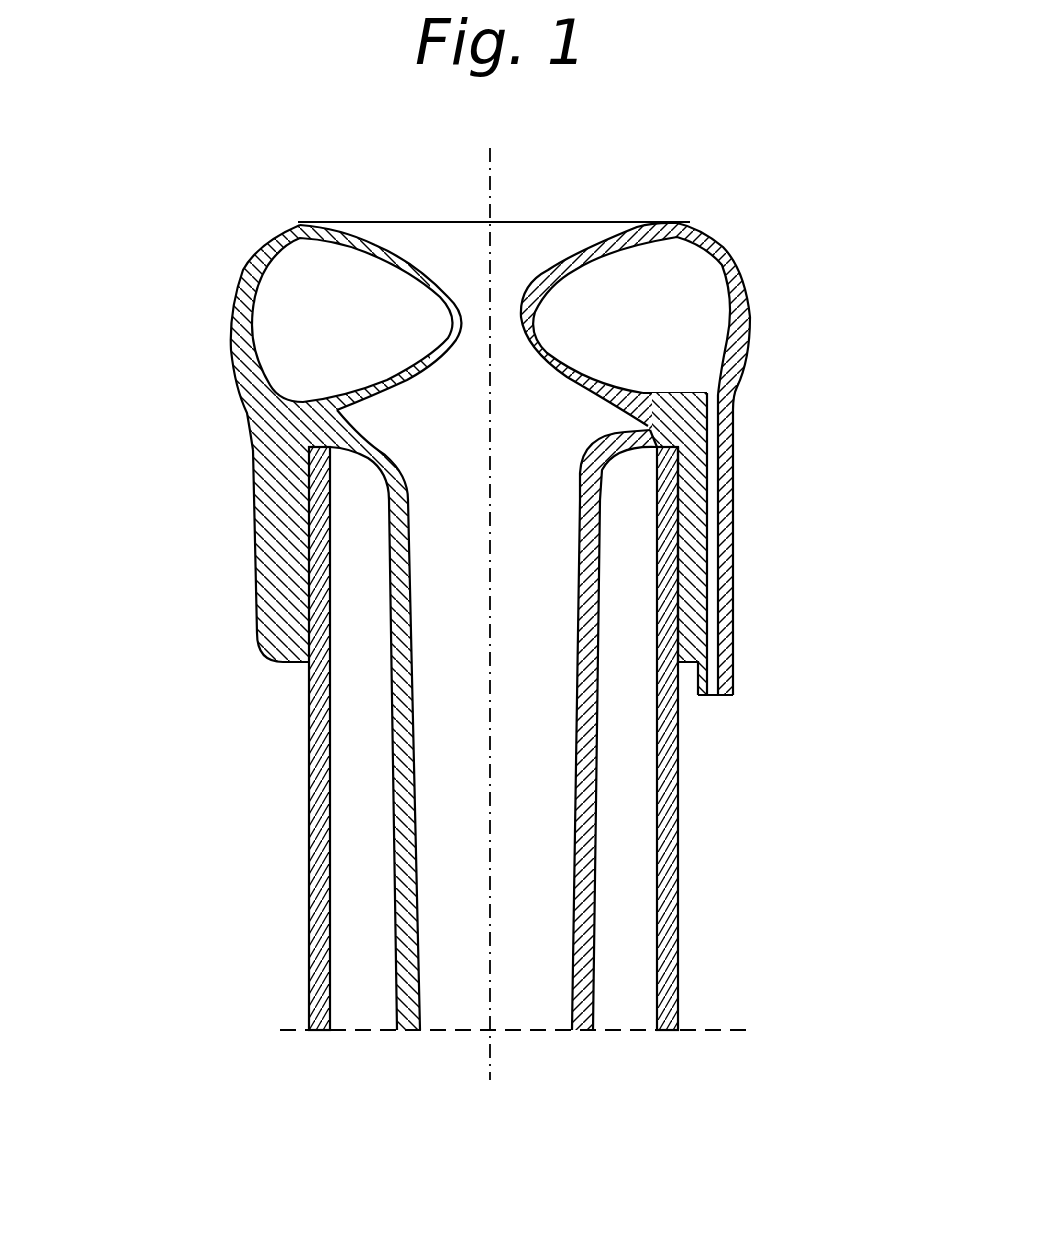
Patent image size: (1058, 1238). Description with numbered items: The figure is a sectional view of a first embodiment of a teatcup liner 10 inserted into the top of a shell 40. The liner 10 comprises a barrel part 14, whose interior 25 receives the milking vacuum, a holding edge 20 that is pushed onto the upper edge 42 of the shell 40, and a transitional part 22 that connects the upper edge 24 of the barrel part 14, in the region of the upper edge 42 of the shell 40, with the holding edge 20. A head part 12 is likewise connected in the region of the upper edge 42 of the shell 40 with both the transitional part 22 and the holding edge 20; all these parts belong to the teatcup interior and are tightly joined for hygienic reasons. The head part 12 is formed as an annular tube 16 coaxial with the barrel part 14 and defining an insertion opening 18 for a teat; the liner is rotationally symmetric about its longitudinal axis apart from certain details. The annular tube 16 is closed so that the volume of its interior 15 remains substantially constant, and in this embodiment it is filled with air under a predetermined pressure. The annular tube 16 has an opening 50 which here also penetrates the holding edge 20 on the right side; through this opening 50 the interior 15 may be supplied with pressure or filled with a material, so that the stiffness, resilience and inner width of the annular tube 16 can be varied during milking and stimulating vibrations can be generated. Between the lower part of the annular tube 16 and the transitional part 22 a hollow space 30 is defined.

The liner 10 is at (732, 245).
The head part 12 is at (260, 410).
The barrel part 14 is at (585, 848).
The interior 15 is at (637, 311).
The annular tube 16 is at (740, 295).
The insertion opening 18 is at (523, 247).
The holding edge 20 is at (280, 563).
The transitional part 22 is at (650, 430).
The upper edge 24 is at (582, 532).
The interior 25 is at (515, 967).
The hollow space 30 is at (378, 418).
The shell 40 is at (675, 928).
The upper edge 42 is at (678, 447).
The opening 50 is at (711, 697).